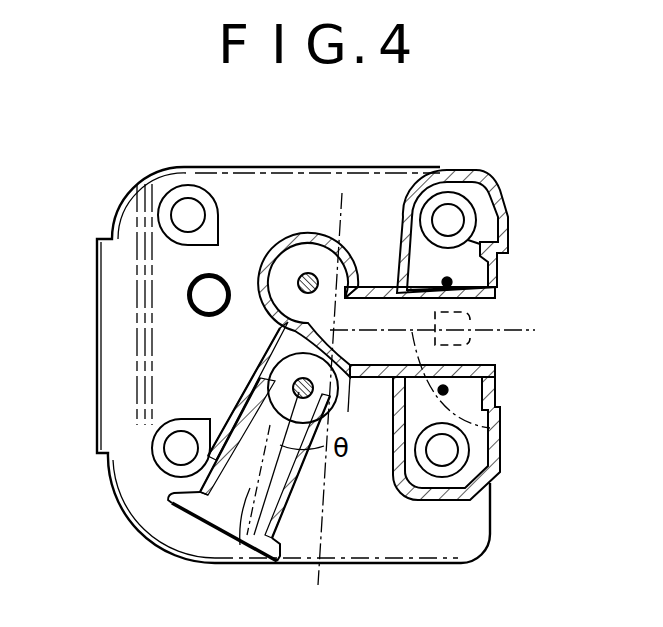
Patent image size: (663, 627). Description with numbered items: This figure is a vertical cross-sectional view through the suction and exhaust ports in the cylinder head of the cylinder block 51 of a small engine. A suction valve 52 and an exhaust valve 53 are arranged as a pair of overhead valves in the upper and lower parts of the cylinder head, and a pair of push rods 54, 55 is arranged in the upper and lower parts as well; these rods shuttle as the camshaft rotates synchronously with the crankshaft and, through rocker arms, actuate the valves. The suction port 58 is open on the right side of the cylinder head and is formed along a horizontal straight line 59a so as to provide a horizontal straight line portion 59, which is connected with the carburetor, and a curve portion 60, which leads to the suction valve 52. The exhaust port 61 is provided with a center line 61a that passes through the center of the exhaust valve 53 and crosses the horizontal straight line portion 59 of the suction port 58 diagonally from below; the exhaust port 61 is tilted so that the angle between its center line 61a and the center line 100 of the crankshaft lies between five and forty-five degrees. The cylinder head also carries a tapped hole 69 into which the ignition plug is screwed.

The cylinder block 51 is at (228, 168).
The suction valve 52 is at (310, 272).
The exhaust valve 53 is at (298, 384).
The push rod 54 is at (452, 282).
The push rod 55 is at (448, 389).
The suction port 58 is at (482, 340).
The horizontal straight line portion 59 is at (433, 355).
The horizontal straight line 59a is at (490, 428).
The curve portion 60 is at (366, 333).
The exhaust port 61 is at (178, 560).
The center line 61a is at (250, 552).
The tapped hole 69 is at (200, 298).
The center line of the crankshaft 100 is at (327, 487).